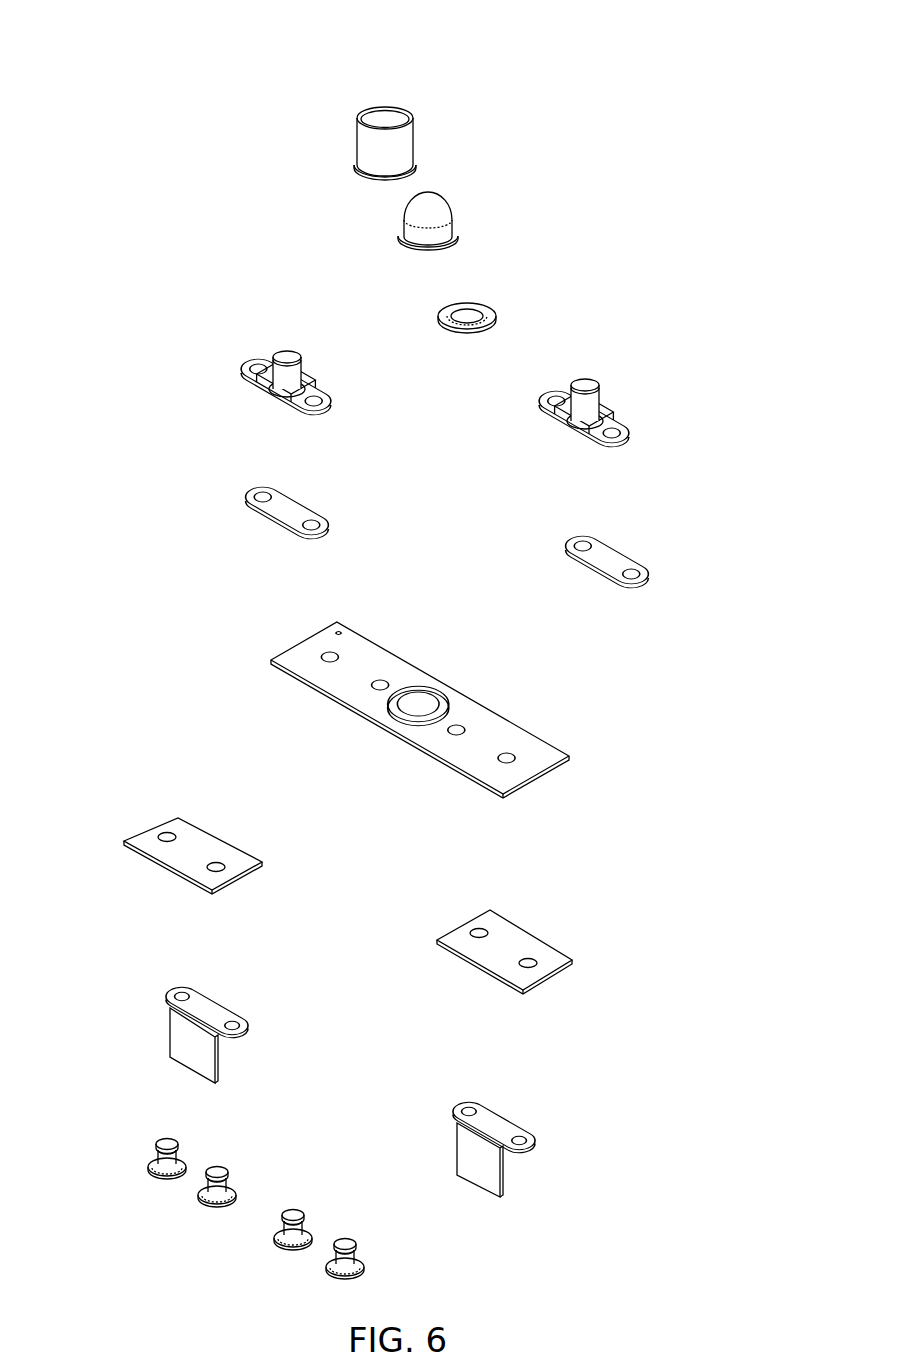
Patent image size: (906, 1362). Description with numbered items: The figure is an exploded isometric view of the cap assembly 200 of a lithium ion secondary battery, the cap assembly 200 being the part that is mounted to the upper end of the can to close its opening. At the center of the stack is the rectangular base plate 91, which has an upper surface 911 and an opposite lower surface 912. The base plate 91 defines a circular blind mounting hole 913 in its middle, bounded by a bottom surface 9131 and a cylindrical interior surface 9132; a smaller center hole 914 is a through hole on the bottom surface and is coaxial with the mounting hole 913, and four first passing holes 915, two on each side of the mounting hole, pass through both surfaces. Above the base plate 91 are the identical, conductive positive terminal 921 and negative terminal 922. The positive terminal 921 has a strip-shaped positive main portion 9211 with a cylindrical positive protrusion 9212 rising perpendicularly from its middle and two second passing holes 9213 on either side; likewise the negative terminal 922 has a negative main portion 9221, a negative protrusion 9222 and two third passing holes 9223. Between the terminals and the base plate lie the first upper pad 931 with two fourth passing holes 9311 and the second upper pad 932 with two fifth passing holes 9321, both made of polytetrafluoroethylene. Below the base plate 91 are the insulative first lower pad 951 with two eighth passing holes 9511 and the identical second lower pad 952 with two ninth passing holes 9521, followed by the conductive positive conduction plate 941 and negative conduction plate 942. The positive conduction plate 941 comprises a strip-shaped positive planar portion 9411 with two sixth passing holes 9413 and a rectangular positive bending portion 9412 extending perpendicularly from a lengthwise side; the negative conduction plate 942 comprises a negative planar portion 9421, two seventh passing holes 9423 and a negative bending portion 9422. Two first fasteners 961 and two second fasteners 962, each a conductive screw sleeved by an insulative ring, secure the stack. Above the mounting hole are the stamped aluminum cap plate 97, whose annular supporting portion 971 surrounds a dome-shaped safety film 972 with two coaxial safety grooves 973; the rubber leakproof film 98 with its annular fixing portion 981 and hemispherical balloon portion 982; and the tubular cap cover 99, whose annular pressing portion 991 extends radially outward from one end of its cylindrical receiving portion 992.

The cap assembly 200 is at (401, 45).
The cap cover 99 is at (395, 133).
The pressing portion 991 is at (357, 162).
The receiving portion 992 is at (380, 122).
The leakproof film 98 is at (491, 193).
The fixing portion 981 is at (456, 236).
The balloon portion 982 is at (436, 205).
The cap plate 97 is at (494, 294).
The supporting portion 971 is at (495, 322).
The safety film 972 is at (462, 318).
The safety grooves 973 is at (480, 311).
The positive terminal 921 is at (284, 351).
The positive main portion 9211 is at (280, 392).
The positive protrusion 9212 is at (287, 364).
The second passing holes 9213 is at (260, 370).
The negative terminal 922 is at (650, 393).
The negative main portion 9221 is at (615, 424).
The negative protrusion 9222 is at (585, 392).
The third passing holes 9223 is at (612, 434).
The first upper pad 931 is at (260, 484).
The fourth passing holes 9311 is at (262, 497).
The second upper pad 932 is at (655, 540).
The fifth passing holes 9321 is at (636, 575).
The base plate 91 is at (423, 690).
The upper surface 911 is at (296, 657).
The lower surface 912 is at (300, 685).
The mounting hole 913 is at (463, 657).
The bottom surface 9131 is at (441, 706).
The cylindrical interior surface 9132 is at (424, 698).
The center hole 914 is at (416, 713).
The first passing holes 915 is at (508, 757).
The first lower pad 951 is at (212, 829).
The eighth passing holes 9511 is at (167, 836).
The second lower pad 952 is at (505, 929).
The ninth passing holes 9521 is at (478, 932).
The positive conduction plate 941 is at (188, 1012).
The positive planar portion 9411 is at (197, 1005).
The positive bending portion 9412 is at (188, 1048).
The sixth passing holes 9413 is at (233, 1024).
The negative conduction plate 942 is at (532, 1144).
The negative planar portion 9421 is at (484, 1110).
The negative bending portion 9422 is at (488, 1175).
The seventh passing holes 9423 is at (520, 1140).
The first fasteners 961 is at (230, 1148).
The second fasteners 962 is at (372, 1245).